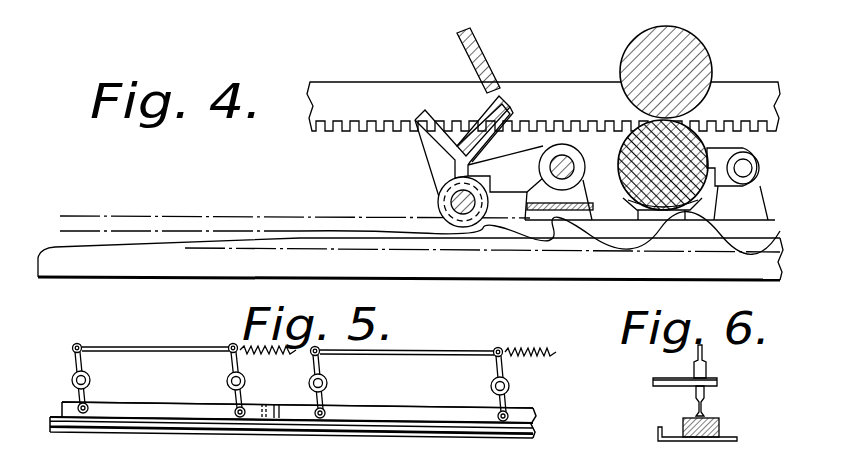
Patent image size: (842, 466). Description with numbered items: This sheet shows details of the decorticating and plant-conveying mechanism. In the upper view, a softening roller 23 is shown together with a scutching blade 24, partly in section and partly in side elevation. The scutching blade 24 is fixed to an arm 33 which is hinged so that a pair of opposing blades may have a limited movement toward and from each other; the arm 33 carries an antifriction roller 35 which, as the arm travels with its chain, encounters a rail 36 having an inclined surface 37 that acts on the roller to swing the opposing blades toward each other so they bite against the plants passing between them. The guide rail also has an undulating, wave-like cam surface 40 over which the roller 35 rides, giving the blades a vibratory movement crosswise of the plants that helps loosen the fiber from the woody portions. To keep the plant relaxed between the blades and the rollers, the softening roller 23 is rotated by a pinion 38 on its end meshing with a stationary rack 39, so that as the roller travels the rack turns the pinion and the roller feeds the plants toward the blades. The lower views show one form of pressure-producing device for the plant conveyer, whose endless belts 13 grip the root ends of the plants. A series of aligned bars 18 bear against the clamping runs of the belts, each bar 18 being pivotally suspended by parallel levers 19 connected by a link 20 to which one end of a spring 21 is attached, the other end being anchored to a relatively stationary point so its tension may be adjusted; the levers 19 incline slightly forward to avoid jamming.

In FIG. 5, the endless belts 13 is at (522, 437).
In FIG. 6, the endless belts 13 is at (720, 432).
In FIG. 5, the bars 18 is at (155, 411).
In FIG. 6, the bars 18 is at (711, 420).
In FIG. 5, the parallel levers 19 is at (326, 367).
In FIG. 6, the parallel levers 19 is at (706, 372).
In FIG. 5, the link 20 is at (163, 347).
In FIG. 5, the spring 21 is at (401, 370).
In FIG. 4, the softening rollers 23 is at (700, 62).
In FIG. 4, the scutching blades 24 is at (484, 58).
In FIG. 4, the arm 33 is at (435, 157).
In FIG. 4, the antifriction rollers 35 is at (440, 209).
In FIG. 4, the rails 36 is at (520, 273).
In FIG. 4, the inclined surfaces 37 is at (215, 238).
In FIG. 4, the pinion 38 is at (628, 146).
In FIG. 4, the stationary rack 39 is at (555, 86).
In FIG. 4, the undulating cam surface 40 is at (568, 233).